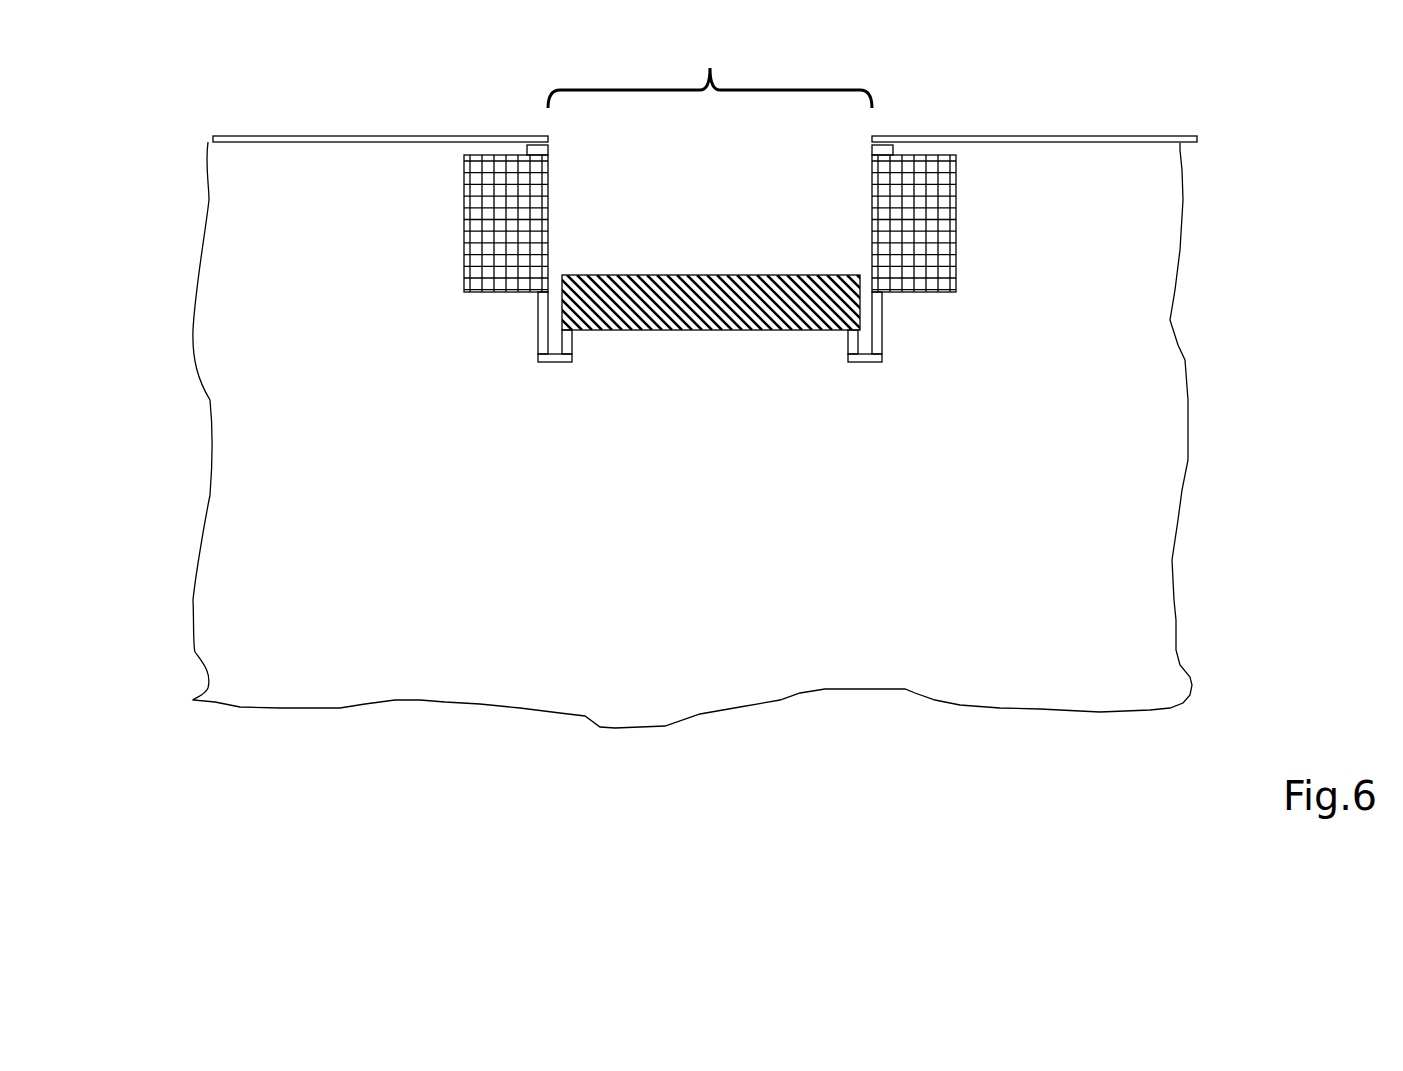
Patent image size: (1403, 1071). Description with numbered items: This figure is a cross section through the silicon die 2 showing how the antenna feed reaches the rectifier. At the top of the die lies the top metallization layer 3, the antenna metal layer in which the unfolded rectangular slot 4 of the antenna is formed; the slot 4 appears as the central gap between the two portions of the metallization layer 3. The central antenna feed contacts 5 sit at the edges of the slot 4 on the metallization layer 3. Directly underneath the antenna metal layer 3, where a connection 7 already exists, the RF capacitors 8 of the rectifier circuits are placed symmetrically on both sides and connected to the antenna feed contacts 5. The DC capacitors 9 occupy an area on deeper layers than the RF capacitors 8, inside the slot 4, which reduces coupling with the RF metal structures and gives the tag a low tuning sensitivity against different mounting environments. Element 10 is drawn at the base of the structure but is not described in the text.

The silicon die 2 is at (1140, 390).
The top metallization layer 3 is at (368, 138).
The slot 4 is at (710, 63).
The antenna feed contacts 5 is at (540, 150).
The connection 7 is at (542, 314).
The RF capacitors 8 is at (490, 258).
The DC capacitors 9 is at (650, 320).
The base layer 10 is at (543, 362).